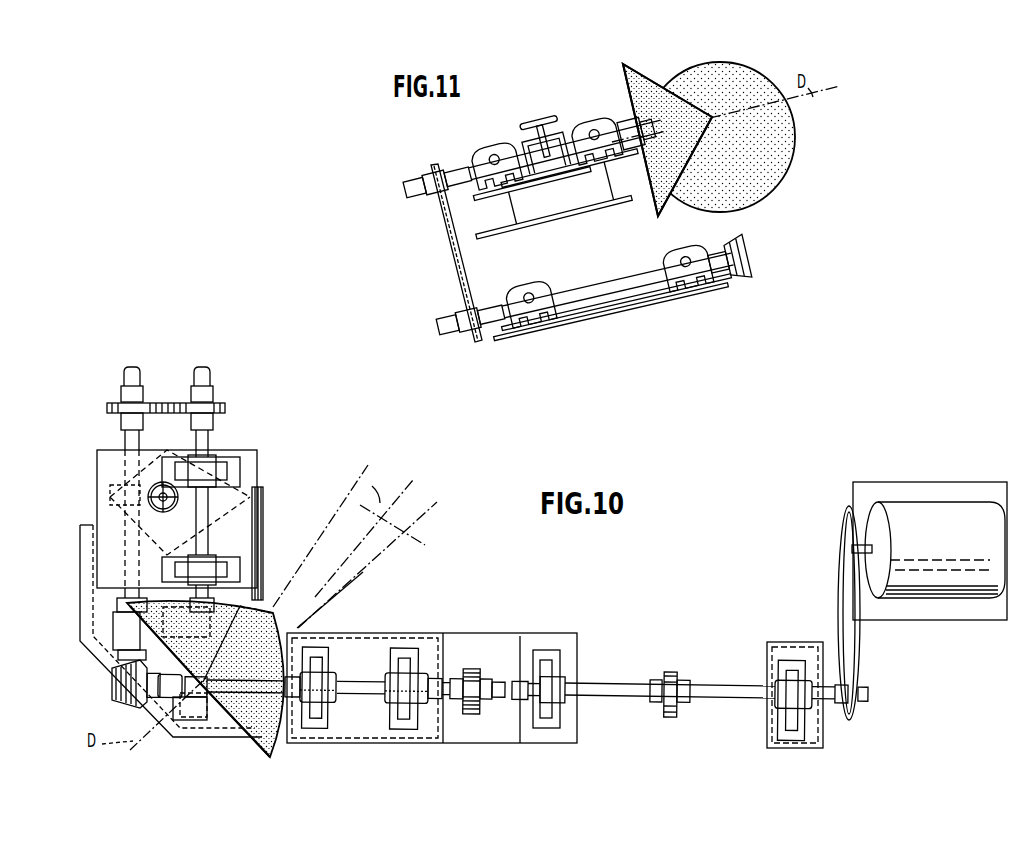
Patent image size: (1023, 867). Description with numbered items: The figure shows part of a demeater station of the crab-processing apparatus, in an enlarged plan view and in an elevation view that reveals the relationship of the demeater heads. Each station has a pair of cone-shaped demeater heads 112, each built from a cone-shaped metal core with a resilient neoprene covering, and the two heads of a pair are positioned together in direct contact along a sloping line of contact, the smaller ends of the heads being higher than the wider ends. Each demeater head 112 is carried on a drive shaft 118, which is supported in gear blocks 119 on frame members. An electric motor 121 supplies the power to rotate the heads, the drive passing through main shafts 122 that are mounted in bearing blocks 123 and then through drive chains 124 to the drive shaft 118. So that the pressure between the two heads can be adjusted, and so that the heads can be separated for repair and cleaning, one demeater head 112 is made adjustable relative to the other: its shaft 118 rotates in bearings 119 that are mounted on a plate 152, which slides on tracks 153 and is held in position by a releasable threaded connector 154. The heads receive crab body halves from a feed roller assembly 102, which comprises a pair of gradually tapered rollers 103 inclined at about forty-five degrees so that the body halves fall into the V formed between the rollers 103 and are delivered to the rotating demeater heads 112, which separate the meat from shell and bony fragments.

In FIG. 11, the demeater head 112 is at (633, 95).
In FIG. 10, the demeater head 112 is at (118, 618).
In FIG. 11, the drive shaft 118 is at (633, 140).
In FIG. 10, the drive shaft 118 is at (205, 505).
In FIG. 11, the gear blocks 119 is at (491, 162).
In FIG. 10, the gear blocks 119 is at (316, 690).
In FIG. 10, the electric motor 121 is at (899, 516).
In FIG. 10, the main shafts 122 is at (100, 600).
In FIG. 10, the bearing blocks 123 is at (797, 688).
In FIG. 10, the drive chains 124 is at (471, 668).
In FIG. 11, the plate 152 is at (563, 134).
In FIG. 10, the plate 152 is at (262, 520).
In FIG. 11, the tracks 153 is at (489, 209).
In FIG. 11, the releasable threaded connector 154 is at (531, 131).
In FIG. 10, the releasable threaded connector 154 is at (162, 482).
In FIG. 10, the feed roller assembly 102 is at (362, 571).
In FIG. 10, the rollers 103 is at (405, 520).